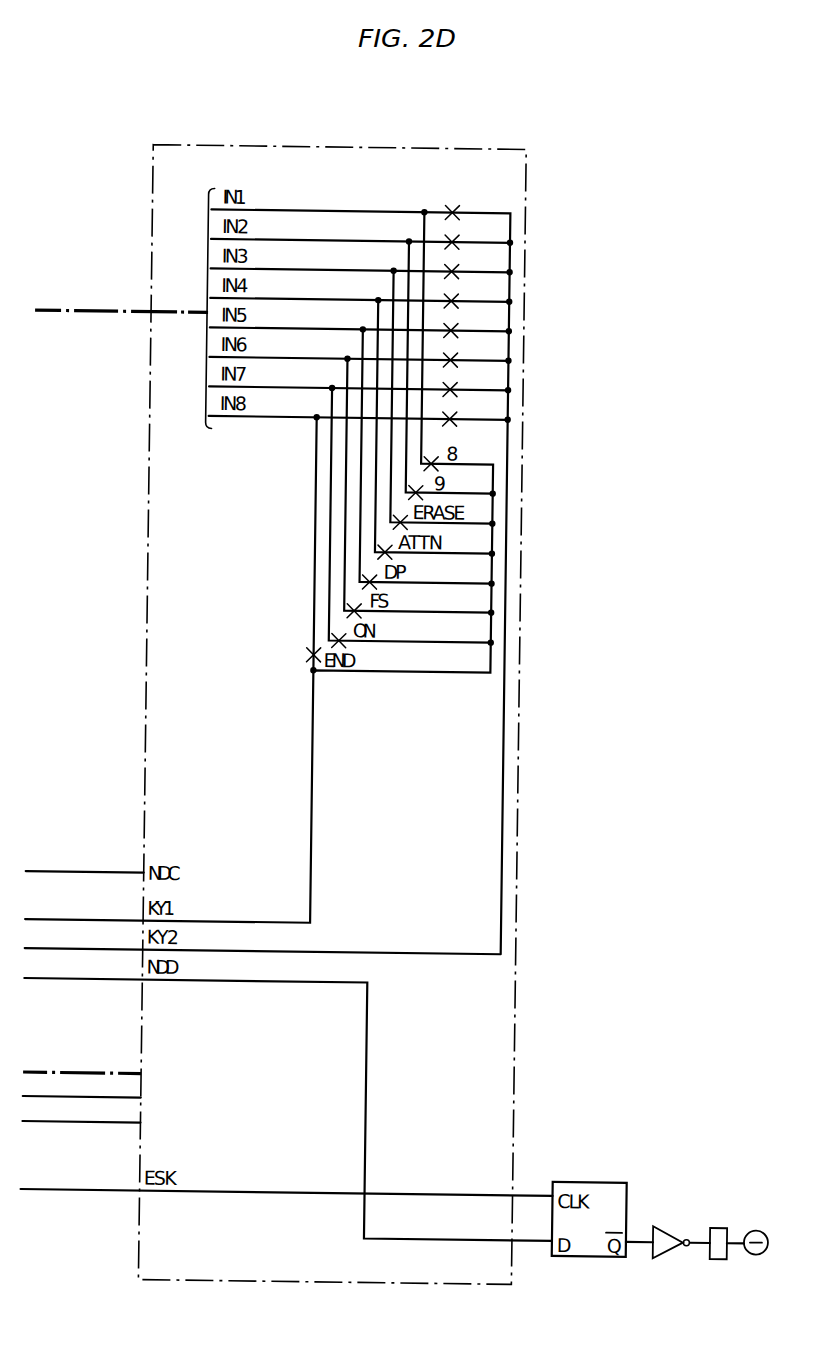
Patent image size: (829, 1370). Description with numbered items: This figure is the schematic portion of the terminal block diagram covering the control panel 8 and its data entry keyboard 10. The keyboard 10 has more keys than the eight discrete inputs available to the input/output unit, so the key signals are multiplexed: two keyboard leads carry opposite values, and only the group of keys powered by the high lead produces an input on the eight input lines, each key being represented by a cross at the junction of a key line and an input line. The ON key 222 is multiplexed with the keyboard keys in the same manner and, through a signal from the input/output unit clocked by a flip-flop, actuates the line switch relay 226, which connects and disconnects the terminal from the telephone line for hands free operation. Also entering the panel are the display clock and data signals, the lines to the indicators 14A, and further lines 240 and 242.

The control panel 8 is at (291, 160).
The data entry keyboard 10 is at (504, 378).
The ON key 222 is at (338, 633).
The line switch relay 226 is at (715, 1245).
The indicators 14A is at (119, 1074).
The line 240 is at (101, 1098).
The line 242 is at (100, 1123).